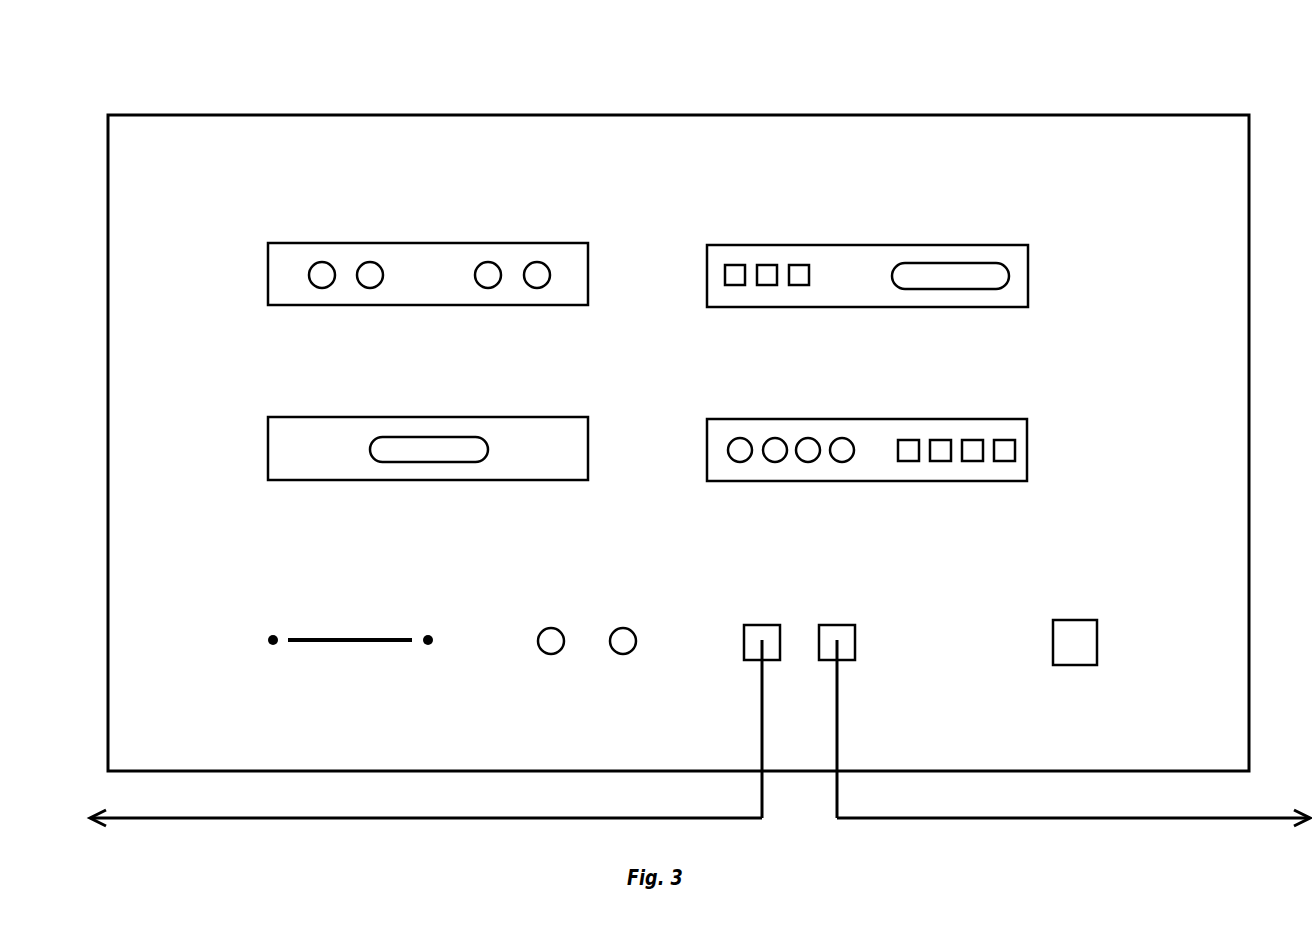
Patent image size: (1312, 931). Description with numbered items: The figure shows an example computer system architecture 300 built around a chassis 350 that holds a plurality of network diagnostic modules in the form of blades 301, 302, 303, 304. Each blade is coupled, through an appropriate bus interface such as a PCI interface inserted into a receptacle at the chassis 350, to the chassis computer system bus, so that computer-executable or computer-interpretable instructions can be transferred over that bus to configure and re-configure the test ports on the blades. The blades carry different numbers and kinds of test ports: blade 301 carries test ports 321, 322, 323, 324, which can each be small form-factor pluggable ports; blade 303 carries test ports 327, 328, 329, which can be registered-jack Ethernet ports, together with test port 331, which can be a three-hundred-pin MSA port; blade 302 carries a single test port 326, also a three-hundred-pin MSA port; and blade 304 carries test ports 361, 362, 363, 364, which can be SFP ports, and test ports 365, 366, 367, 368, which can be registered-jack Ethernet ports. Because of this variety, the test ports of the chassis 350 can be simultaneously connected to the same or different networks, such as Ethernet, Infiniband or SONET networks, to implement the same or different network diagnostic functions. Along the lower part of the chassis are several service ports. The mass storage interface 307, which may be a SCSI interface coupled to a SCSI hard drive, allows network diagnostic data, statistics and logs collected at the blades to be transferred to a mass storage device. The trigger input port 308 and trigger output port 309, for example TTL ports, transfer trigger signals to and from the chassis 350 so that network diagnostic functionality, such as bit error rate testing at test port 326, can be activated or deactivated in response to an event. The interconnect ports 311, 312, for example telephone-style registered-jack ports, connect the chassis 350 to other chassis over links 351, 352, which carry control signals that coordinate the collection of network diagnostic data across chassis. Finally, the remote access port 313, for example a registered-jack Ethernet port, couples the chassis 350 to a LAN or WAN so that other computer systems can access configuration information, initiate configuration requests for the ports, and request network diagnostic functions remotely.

The computer system architecture 300 is at (769, 84).
The chassis 350 is at (265, 151).
The blade 301 is at (268, 282).
The blade 302 is at (268, 448).
The blade 303 is at (1030, 276).
The blade 304 is at (1030, 452).
The mass storage interface 307 is at (349, 642).
The trigger input port 308 is at (551, 628).
The trigger output port 309 is at (623, 628).
The interconnect port 311 is at (770, 627).
The interconnect port 312 is at (855, 643).
The remote access port 313 is at (1085, 627).
The test port 321 is at (319, 263).
The test port 322 is at (370, 262).
The test port 323 is at (486, 262).
The test port 324 is at (537, 262).
The test port 326 is at (400, 437).
The test port 327 is at (726, 266).
The test port 328 is at (758, 266).
The test port 329 is at (790, 266).
The test port 331 is at (943, 263).
The link 351 is at (297, 820).
The link 352 is at (1050, 820).
The test port 361 is at (733, 442).
The test port 362 is at (766, 442).
The test port 363 is at (815, 460).
The test port 364 is at (847, 462).
The test port 365 is at (920, 461).
The test port 366 is at (952, 461).
The test port 367 is at (983, 440).
The test port 368 is at (1015, 440).